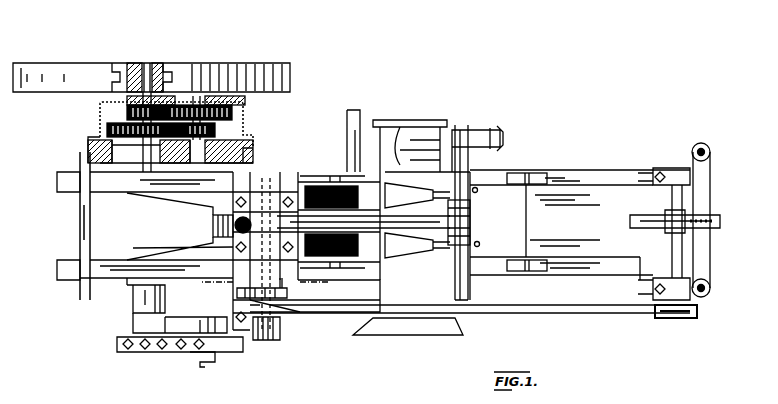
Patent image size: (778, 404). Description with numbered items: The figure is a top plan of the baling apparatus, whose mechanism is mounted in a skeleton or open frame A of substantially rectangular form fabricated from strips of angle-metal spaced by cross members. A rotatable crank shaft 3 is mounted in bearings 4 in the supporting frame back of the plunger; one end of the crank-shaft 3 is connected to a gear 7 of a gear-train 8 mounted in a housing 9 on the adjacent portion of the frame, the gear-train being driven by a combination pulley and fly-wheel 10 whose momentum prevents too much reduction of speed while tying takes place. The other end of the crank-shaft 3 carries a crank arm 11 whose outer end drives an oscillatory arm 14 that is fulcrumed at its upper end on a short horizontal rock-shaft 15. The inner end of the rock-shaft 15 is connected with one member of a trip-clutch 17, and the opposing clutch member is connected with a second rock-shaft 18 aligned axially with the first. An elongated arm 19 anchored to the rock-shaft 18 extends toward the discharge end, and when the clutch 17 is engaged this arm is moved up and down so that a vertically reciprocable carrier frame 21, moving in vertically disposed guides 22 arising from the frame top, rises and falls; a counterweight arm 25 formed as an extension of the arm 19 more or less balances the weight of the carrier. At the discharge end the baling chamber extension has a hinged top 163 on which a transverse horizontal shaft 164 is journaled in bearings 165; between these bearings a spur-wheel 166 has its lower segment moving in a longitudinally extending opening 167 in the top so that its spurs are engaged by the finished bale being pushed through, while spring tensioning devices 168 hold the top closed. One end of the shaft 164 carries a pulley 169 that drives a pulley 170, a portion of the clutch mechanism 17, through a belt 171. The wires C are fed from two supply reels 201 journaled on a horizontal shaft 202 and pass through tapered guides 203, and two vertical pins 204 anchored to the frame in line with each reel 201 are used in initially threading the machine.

The combination pulley and fly-wheel 10 is at (78, 80).
The housing 9 is at (100, 112).
The gear-train 8 is at (243, 108).
The gear 7 is at (107, 128).
The frame A is at (72, 270).
The bearings 4 is at (128, 170).
The crank shaft 3 is at (136, 200).
The counterweight arm 25 is at (213, 214).
The carrier frame 21 is at (194, 244).
The second rock-shaft 18 is at (262, 178).
The guides 22 is at (213, 288).
The crank arm 11 is at (172, 322).
The oscillatory arm 14 is at (128, 348).
The pulley 170 is at (252, 304).
The trip-clutch 17 is at (278, 306).
The rock-shaft 15 is at (280, 332).
The horizontal shaft 202 is at (320, 186).
The supply reels 201 is at (350, 186).
The wires C is at (386, 196).
The elongated arm 19 is at (470, 219).
The tapered guides 203 is at (470, 204).
The vertical pins 204 is at (478, 186).
The hinged top 163 is at (580, 183).
The bearings 165 is at (672, 172).
The transverse horizontal shaft 164 is at (672, 246).
The spur-wheel 166 is at (700, 215).
The longitudinally extending opening 167 is at (632, 222).
The spring tensioning devices 168 is at (706, 145).
The belt 171 is at (565, 313).
The pulley 169 is at (690, 318).